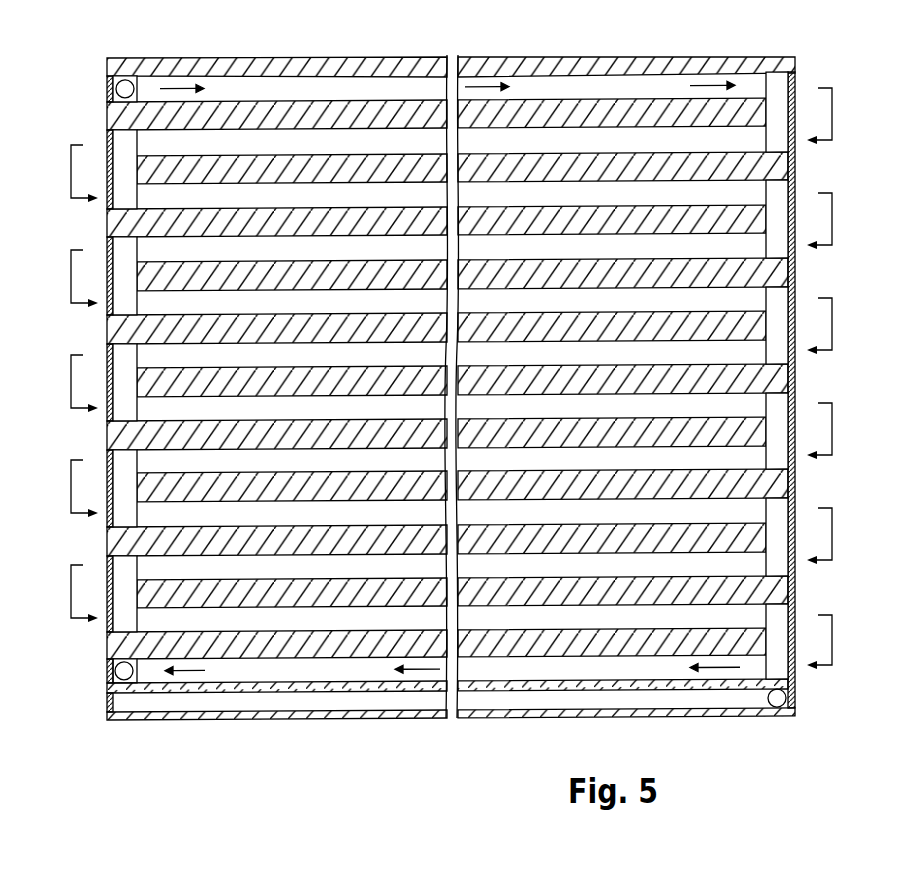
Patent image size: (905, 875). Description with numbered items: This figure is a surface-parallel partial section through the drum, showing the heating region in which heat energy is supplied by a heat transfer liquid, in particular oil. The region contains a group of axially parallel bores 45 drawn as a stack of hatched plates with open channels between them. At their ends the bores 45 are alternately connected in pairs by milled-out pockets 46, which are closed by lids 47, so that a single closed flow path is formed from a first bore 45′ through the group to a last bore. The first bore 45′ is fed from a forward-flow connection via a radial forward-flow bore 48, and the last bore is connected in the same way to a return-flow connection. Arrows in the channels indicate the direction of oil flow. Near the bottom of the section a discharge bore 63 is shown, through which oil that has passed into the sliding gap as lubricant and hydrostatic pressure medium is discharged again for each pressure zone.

The axially parallel bore 45 is at (328, 197).
The first bore 45′ is at (231, 90).
The milled-out pocket 46 is at (122, 138).
The lid 47 is at (108, 207).
The radial forward-flow bore 48 is at (117, 89).
The discharge bore 63 is at (288, 703).